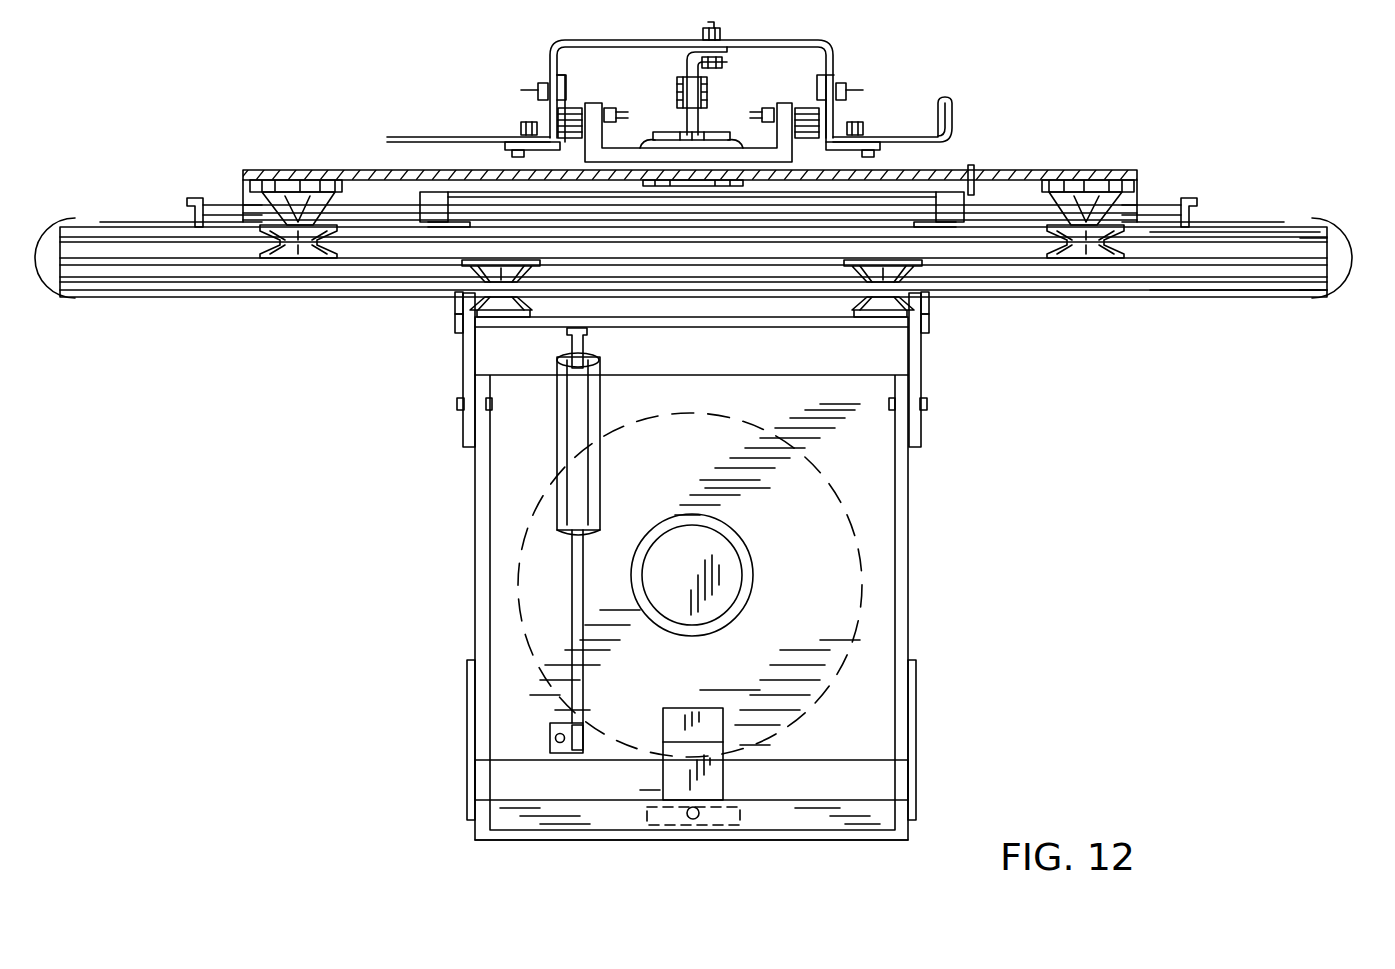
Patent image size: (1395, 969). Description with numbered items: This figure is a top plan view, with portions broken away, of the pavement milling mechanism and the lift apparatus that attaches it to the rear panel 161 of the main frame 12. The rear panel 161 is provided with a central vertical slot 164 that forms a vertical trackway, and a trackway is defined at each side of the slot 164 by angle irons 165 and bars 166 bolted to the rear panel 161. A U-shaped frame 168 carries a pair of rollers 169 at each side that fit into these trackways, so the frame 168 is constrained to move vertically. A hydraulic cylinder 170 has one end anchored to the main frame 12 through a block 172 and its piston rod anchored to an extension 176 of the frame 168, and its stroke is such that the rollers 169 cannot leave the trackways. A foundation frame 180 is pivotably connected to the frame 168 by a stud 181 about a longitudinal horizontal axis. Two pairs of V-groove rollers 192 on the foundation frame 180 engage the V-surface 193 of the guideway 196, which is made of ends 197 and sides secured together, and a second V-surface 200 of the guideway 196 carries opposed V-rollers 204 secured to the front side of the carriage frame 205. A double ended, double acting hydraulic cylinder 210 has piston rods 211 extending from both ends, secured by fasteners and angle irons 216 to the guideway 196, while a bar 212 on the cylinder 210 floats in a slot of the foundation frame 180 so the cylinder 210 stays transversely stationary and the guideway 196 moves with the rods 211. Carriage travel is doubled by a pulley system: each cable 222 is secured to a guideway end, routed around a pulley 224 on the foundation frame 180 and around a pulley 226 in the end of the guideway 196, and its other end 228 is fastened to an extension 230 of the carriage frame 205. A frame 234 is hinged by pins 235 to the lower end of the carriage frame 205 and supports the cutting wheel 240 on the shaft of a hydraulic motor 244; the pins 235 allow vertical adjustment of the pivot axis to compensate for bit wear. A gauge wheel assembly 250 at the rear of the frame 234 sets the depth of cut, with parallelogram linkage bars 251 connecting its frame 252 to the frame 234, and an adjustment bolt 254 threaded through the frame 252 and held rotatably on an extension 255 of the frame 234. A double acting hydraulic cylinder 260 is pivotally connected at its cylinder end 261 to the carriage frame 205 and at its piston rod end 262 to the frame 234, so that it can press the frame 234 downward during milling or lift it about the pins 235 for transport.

The main frame 12 is at (460, 124).
The rear panel 161 is at (549, 60).
The central vertical slot 164 is at (778, 45).
The angle irons 165 is at (570, 108).
The bars 166 is at (515, 146).
The U-shaped frame 168 is at (620, 152).
The rollers 169 is at (557, 126).
The hydraulic cylinder 170 is at (708, 94).
The block 172 is at (686, 70).
The extension 176 is at (700, 124).
The foundation frame 180 is at (1040, 168).
The stud 181 is at (668, 134).
The V-groove rollers 192 is at (298, 225).
The V-surface 193 is at (1238, 232).
The guideway 196 is at (1328, 240).
The ends 197 is at (1322, 298).
The V-surface 200 is at (1218, 300).
The V-rollers 204 is at (545, 290).
The carriage frame 205 is at (921, 365).
The hydraulic cylinder 210 is at (460, 190).
The piston rods 211 is at (228, 205).
The bar 212 is at (974, 172).
The angle irons 216 is at (190, 218).
The cable 222 is at (270, 300).
The pulley 224 is at (455, 237).
The pulley 226 is at (50, 245).
The other end of cable 228 is at (455, 308).
The extension 230 is at (455, 326).
The frame 234 is at (910, 516).
The pins 235 is at (457, 404).
The cutting wheel 240 is at (800, 414).
The hydraulic motor 244 is at (738, 552).
The gauge wheel assembly 250 is at (842, 845).
The parallelogram linkage bars 251 is at (467, 772).
The gauge wheel assembly frame 252 is at (766, 842).
The adjustment bolt 254 is at (685, 820).
The extension 255 is at (725, 780).
The hydraulic cylinder 260 is at (555, 445).
The cylinder end 261 is at (590, 362).
The piston rod end 262 is at (590, 738).